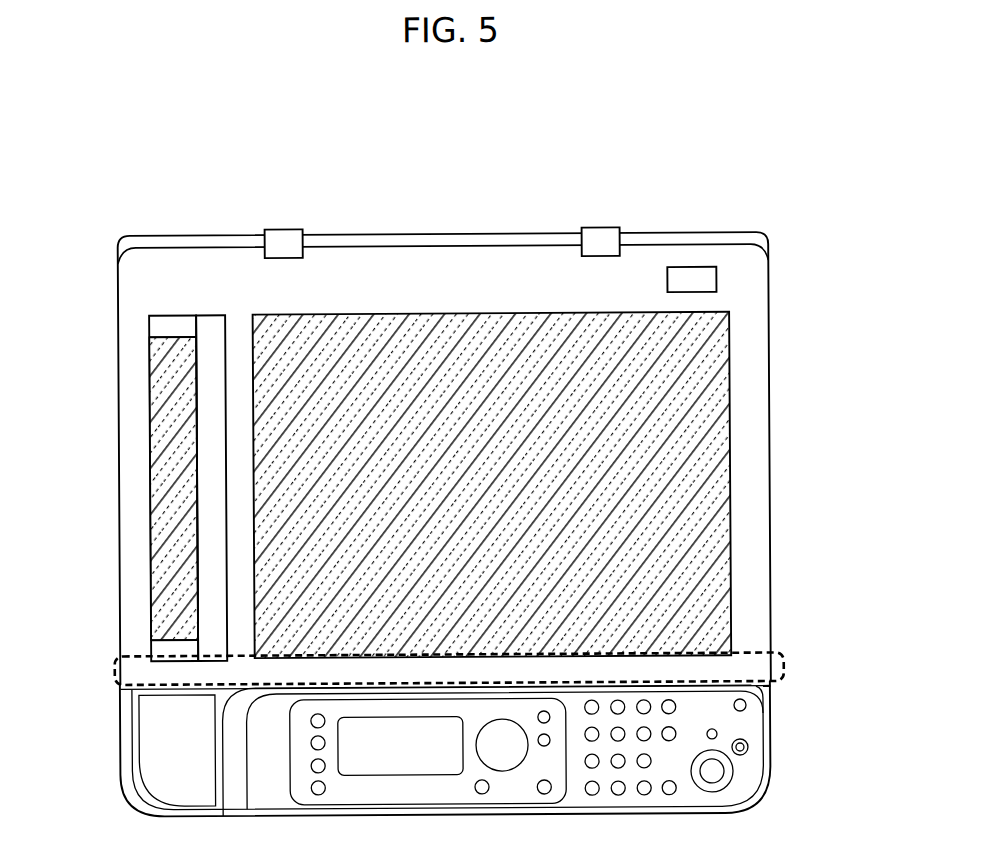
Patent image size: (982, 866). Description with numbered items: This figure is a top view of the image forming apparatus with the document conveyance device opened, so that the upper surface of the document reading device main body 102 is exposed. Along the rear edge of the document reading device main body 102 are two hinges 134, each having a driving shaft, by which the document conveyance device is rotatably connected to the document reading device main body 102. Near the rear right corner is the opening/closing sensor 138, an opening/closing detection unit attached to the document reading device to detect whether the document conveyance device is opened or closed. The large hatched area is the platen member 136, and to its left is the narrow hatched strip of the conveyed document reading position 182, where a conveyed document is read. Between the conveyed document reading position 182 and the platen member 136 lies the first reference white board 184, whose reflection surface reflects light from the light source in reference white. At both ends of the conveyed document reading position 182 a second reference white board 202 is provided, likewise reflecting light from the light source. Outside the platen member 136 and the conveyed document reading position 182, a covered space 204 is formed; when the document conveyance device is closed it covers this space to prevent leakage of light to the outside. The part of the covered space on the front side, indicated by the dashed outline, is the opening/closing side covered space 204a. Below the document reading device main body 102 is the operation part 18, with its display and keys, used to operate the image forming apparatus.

The document reading device main body 102 is at (154, 226).
The hinge 134 is at (603, 233).
The opening/closing sensor 138 is at (718, 276).
The platen member 136 is at (730, 390).
The covered space 204 is at (759, 546).
The opening/closing side covered space 204a is at (779, 665).
The second reference white board 202 is at (164, 321).
The first reference white board 184 is at (213, 321).
The conveyed document reading position 182 is at (168, 471).
The operation part 18 is at (270, 793).